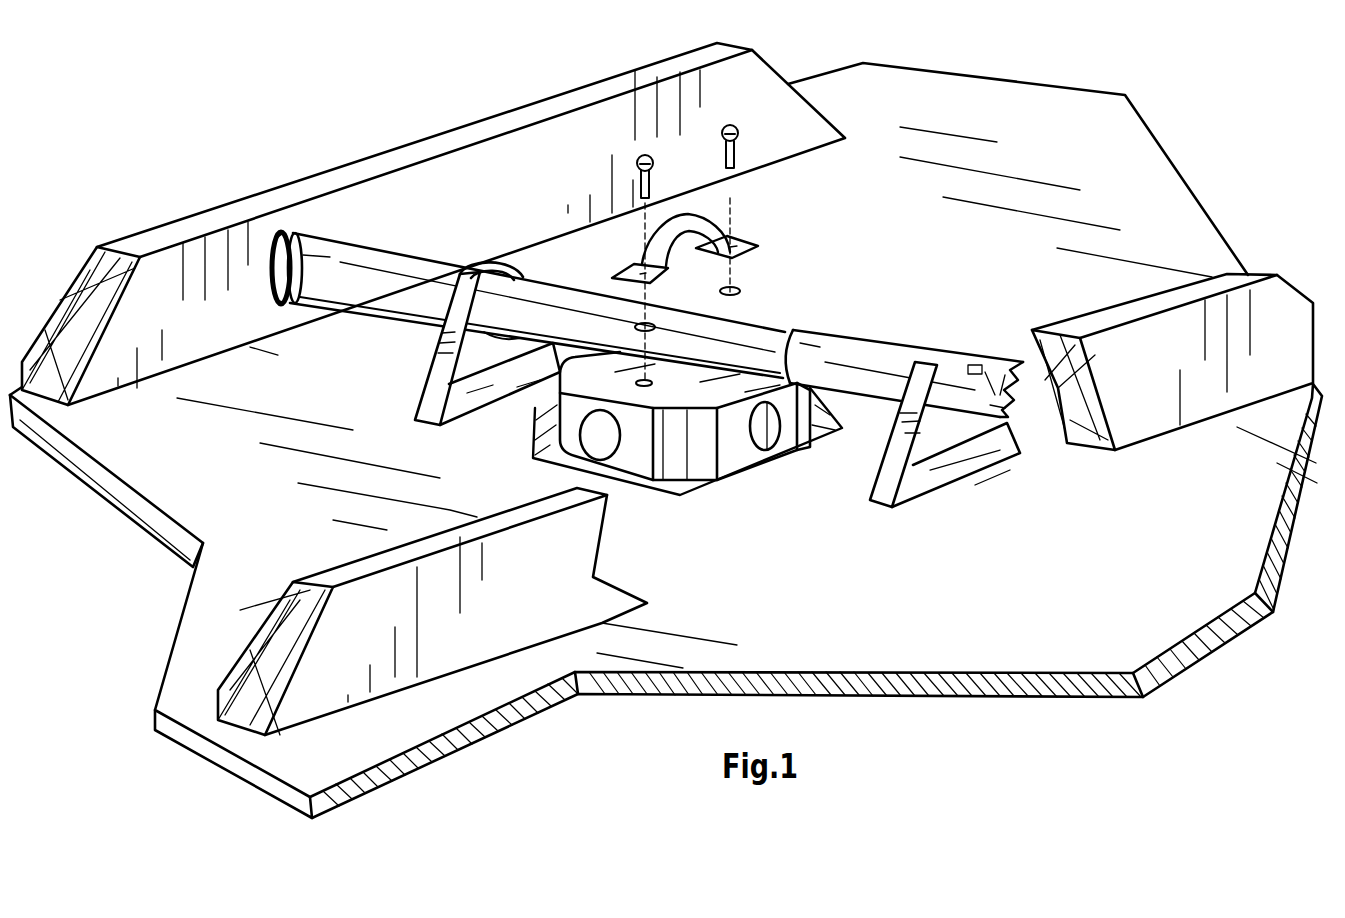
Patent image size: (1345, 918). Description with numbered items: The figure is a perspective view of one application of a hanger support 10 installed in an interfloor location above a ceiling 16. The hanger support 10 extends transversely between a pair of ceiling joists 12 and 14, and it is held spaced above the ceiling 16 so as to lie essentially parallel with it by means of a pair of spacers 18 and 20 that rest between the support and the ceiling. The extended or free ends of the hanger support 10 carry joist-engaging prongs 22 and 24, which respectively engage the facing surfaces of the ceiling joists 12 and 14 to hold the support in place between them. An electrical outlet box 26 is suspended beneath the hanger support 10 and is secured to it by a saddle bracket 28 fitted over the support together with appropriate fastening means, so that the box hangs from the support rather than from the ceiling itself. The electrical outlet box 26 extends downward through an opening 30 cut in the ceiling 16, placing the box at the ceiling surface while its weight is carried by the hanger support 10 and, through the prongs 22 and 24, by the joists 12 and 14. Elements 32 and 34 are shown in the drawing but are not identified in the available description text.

The hanger support 10 is at (822, 268).
The ceiling joist 12 is at (447, 182).
The ceiling joist 14 is at (1148, 397).
The ceiling 16 is at (900, 650).
The spacer 18 is at (440, 368).
The spacer 20 is at (932, 473).
The joist-engaging prong 22 is at (268, 262).
The joist-engaging prong 24 is at (998, 370).
The electrical outlet box 26 is at (737, 457).
The saddle bracket 28 is at (710, 218).
The opening 30 is at (548, 450).
The conduit 32 is at (765, 330).
The coupling 34 is at (875, 355).